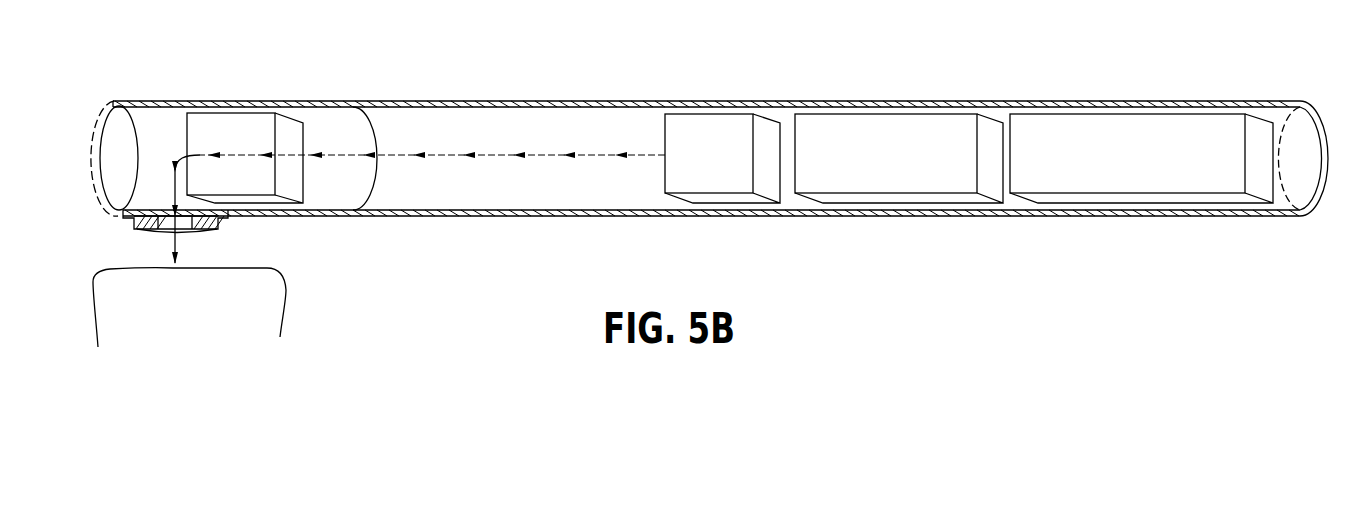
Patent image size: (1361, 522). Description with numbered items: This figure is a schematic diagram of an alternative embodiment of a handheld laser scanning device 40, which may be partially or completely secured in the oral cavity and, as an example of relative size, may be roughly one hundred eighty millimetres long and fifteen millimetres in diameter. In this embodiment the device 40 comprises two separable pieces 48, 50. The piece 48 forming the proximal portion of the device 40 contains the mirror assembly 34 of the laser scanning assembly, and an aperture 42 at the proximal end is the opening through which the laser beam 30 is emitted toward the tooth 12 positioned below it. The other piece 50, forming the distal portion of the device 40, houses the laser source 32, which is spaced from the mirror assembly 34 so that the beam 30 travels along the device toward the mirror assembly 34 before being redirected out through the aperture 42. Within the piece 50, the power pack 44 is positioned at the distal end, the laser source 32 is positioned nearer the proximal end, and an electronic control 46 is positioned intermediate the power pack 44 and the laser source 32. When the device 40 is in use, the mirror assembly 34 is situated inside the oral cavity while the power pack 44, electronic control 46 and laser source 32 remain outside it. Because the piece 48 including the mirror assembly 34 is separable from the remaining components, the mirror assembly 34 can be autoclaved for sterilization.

The tooth 12 is at (286, 289).
The laser beam 30 is at (174, 242).
The laser source 32 is at (723, 118).
The mirror assembly 34 is at (238, 123).
The handheld device 40 is at (1270, 77).
The aperture 42 is at (165, 231).
The power pack 44 is at (1135, 118).
The electronic control 46 is at (907, 118).
The piece comprising the proximal portion of the device 48 is at (325, 100).
The other piece comprising the distal portion of the device 50 is at (390, 100).